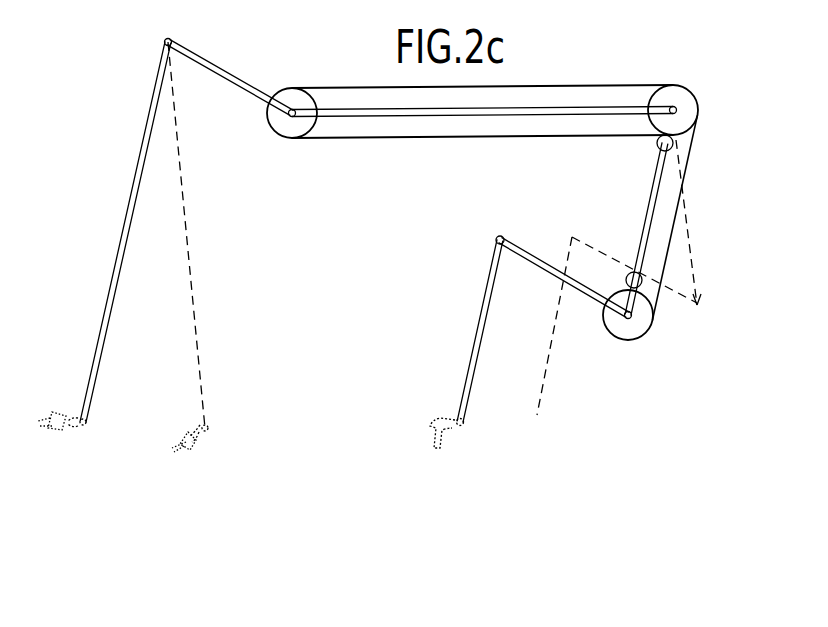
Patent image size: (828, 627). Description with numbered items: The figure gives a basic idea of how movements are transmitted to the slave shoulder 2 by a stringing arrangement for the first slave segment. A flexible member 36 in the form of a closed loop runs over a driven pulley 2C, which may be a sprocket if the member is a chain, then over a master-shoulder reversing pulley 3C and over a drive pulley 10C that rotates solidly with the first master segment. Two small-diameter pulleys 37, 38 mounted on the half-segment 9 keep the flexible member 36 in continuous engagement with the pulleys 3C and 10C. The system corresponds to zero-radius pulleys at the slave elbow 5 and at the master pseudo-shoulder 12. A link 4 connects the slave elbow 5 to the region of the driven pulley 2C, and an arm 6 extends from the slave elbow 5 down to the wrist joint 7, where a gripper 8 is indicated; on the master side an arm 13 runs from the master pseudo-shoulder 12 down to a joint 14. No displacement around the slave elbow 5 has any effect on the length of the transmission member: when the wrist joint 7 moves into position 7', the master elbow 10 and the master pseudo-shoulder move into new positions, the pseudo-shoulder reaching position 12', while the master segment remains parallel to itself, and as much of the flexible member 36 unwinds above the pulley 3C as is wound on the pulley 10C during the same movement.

The slave shoulder 2 is at (277, 132).
The driven pulley 2C is at (295, 93).
The master-shoulder reversing pulley 3C is at (677, 92).
The connecting link 4 is at (222, 60).
The slave elbow 5 is at (171, 39).
The arm 6 is at (119, 290).
The wrist joint 7 is at (90, 430).
The wrist joint position 7' is at (207, 247).
The gripper 8 is at (46, 410).
The half-segment 9 is at (650, 205).
The master elbow 10 is at (610, 322).
The drive pulley 10C is at (636, 335).
The master pseudo-shoulder 12 is at (555, 260).
The master pseudo-shoulder position 12' is at (617, 303).
The arm 13 is at (470, 332).
The gripper pivot 14 is at (464, 425).
The flexible member 36 is at (548, 87).
The small-diameter pulley 37 is at (657, 145).
The small-diameter pulley 38 is at (627, 275).